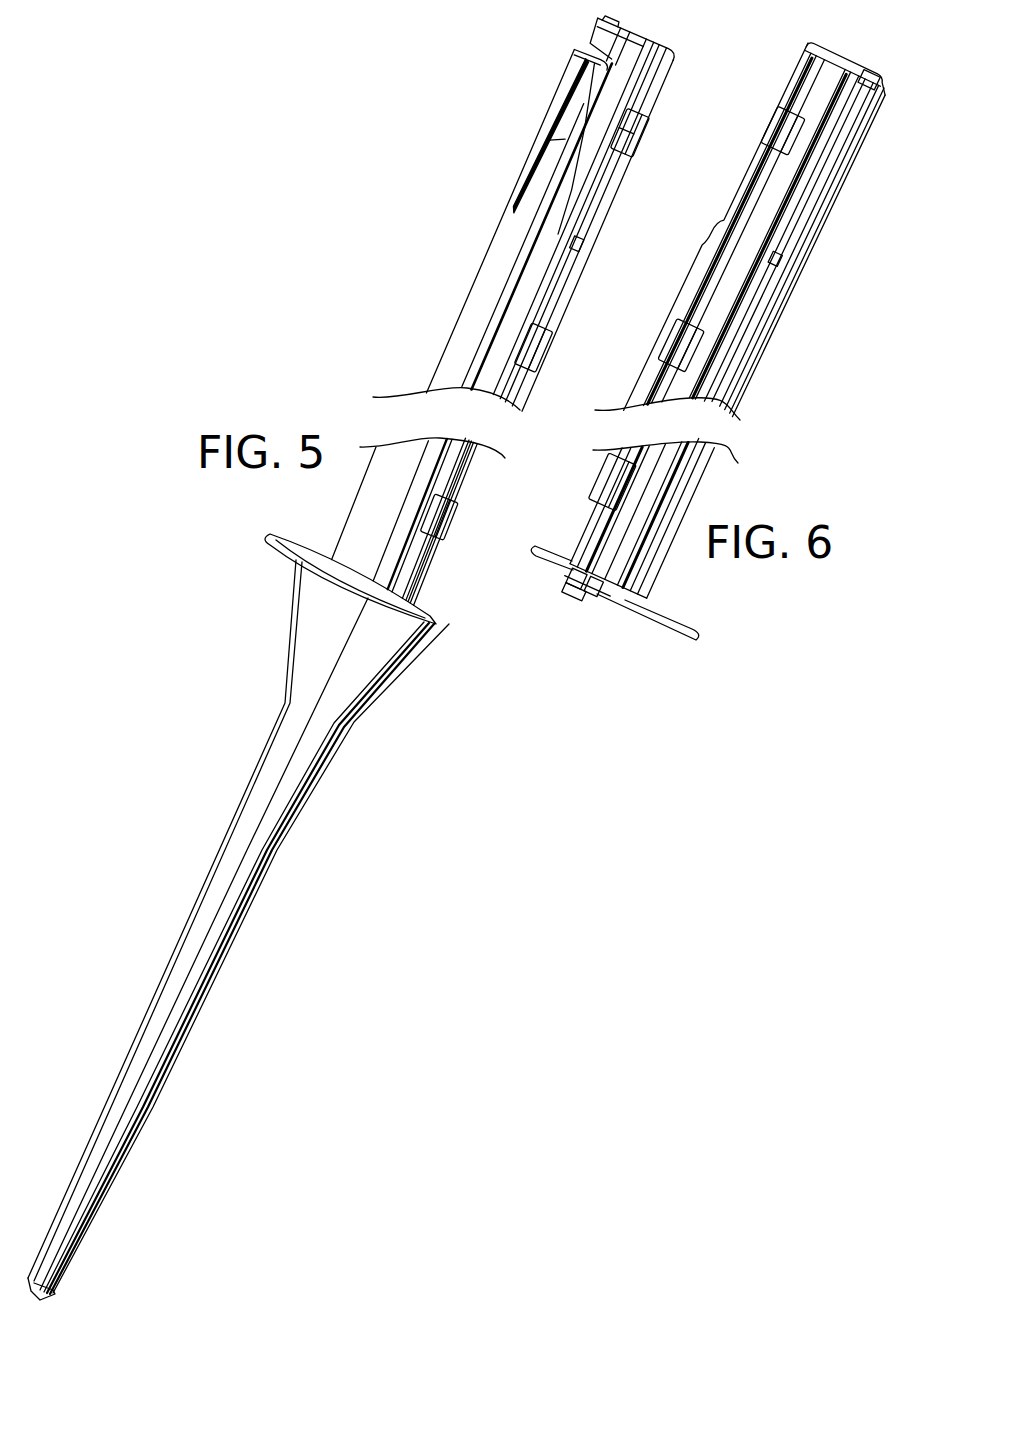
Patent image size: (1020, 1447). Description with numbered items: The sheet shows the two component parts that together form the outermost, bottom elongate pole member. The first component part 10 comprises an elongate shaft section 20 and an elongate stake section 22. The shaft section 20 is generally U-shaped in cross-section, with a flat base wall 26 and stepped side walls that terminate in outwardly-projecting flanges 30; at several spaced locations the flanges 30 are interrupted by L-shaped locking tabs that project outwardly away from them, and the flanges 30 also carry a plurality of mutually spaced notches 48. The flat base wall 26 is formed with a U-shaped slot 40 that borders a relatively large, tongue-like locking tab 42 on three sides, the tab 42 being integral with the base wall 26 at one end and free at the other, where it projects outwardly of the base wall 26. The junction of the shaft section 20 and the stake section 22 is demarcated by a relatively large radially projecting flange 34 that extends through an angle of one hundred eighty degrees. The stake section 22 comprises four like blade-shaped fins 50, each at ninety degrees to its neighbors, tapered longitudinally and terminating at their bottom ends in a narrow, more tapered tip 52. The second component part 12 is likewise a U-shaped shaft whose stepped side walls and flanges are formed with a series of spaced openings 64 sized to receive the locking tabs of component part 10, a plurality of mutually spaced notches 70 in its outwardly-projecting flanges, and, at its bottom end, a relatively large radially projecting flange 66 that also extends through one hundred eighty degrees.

In FIG. 5, the component part 10 is at (222, 765).
In FIG. 6, the second component part 12 is at (795, 314).
In FIG. 5, the shaft section 20 is at (488, 222).
In FIG. 5, the stake section 22 is at (252, 947).
In FIG. 5, the flat base wall 26 is at (488, 283).
In FIG. 5, the outwardly-projecting flanges 30 is at (645, 78).
In FIG. 5, the radially projecting flange 34 is at (300, 547).
In FIG. 5, the U-shaped slot 40 is at (550, 140).
In FIG. 5, the locking tab 42 is at (575, 79).
In FIG. 5, the notches 48 is at (582, 240).
In FIG. 5, the blade-shaped fins 50 is at (425, 642).
In FIG. 5, the tip 52 is at (45, 1303).
In FIG. 6, the openings 64 is at (596, 592).
In FIG. 6, the radially projecting flange 66 is at (672, 617).
In FIG. 6, the notches 70 is at (786, 268).